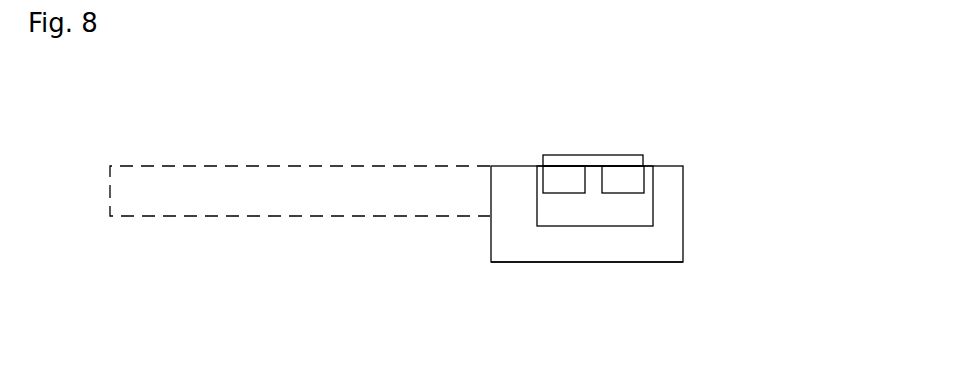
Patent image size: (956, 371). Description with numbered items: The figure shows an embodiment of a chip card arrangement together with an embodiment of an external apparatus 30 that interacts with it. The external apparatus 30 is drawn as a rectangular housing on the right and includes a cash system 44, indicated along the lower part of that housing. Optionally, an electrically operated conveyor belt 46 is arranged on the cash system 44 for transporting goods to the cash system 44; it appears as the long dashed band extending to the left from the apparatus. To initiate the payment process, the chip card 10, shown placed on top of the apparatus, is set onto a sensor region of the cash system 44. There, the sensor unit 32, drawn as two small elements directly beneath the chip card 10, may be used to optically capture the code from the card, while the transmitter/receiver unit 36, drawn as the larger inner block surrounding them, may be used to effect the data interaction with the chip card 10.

The chip card 10 is at (595, 155).
The external apparatus 30 is at (684, 197).
The sensor unit 32 is at (644, 178).
The transmitter/receiver unit 36 is at (563, 193).
The cash system 44 is at (612, 262).
The electrically operated conveyor belt 46 is at (368, 216).